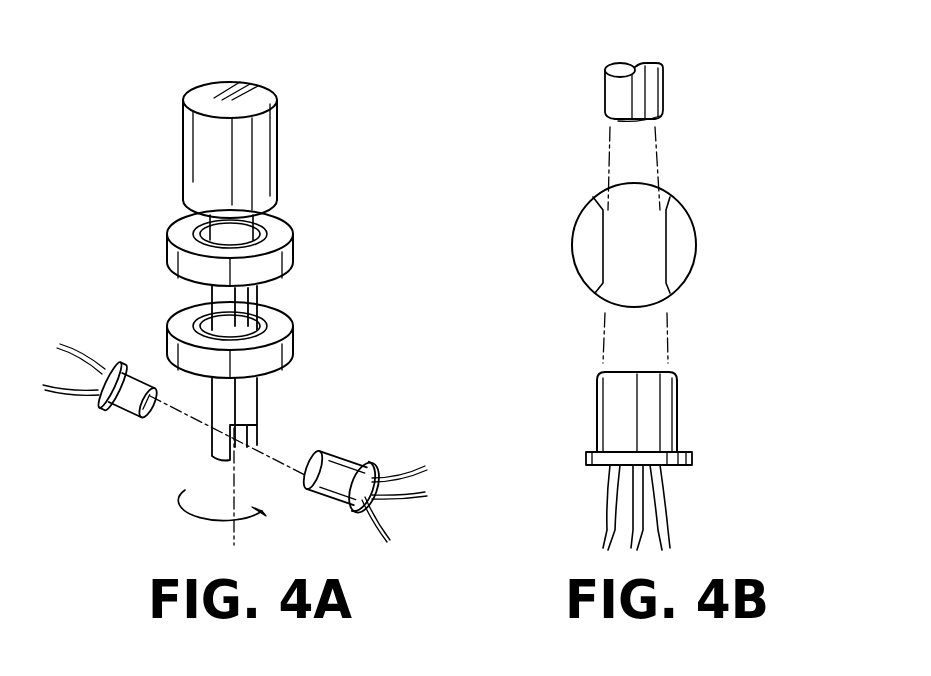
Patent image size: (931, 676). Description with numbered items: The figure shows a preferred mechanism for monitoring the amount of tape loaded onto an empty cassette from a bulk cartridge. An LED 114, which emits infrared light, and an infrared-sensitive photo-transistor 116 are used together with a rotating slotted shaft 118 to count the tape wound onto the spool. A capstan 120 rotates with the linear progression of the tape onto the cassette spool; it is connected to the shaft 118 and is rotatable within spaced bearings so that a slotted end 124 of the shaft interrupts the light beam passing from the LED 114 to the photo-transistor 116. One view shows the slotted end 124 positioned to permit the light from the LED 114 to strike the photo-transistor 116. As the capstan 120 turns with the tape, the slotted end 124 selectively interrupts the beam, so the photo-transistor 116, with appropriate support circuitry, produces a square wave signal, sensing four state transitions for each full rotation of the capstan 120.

In FIG. 4A, the LED 114 is at (122, 410).
In FIG. 4B, the LED 114 is at (647, 97).
In FIG. 4A, the photo-transistor 116 is at (330, 462).
In FIG. 4B, the photo-transistor 116 is at (650, 418).
In FIG. 4A, the rotating slotted shaft 118 is at (225, 302).
In FIG. 4A, the capstan 120 is at (257, 165).
In FIG. 4A, the slotted end 124 is at (257, 395).
In FIG. 4B, the slotted end 124 is at (677, 245).